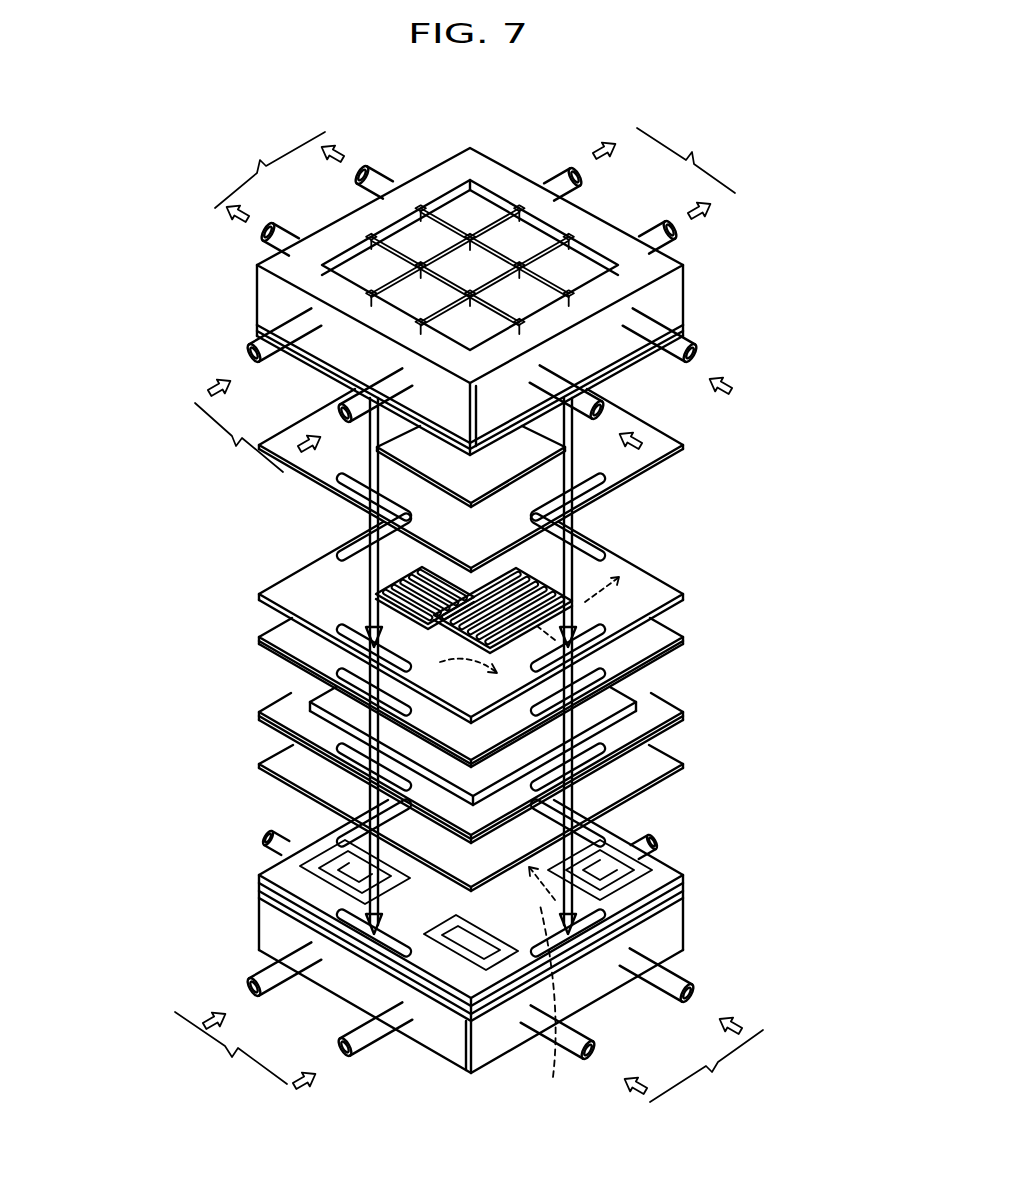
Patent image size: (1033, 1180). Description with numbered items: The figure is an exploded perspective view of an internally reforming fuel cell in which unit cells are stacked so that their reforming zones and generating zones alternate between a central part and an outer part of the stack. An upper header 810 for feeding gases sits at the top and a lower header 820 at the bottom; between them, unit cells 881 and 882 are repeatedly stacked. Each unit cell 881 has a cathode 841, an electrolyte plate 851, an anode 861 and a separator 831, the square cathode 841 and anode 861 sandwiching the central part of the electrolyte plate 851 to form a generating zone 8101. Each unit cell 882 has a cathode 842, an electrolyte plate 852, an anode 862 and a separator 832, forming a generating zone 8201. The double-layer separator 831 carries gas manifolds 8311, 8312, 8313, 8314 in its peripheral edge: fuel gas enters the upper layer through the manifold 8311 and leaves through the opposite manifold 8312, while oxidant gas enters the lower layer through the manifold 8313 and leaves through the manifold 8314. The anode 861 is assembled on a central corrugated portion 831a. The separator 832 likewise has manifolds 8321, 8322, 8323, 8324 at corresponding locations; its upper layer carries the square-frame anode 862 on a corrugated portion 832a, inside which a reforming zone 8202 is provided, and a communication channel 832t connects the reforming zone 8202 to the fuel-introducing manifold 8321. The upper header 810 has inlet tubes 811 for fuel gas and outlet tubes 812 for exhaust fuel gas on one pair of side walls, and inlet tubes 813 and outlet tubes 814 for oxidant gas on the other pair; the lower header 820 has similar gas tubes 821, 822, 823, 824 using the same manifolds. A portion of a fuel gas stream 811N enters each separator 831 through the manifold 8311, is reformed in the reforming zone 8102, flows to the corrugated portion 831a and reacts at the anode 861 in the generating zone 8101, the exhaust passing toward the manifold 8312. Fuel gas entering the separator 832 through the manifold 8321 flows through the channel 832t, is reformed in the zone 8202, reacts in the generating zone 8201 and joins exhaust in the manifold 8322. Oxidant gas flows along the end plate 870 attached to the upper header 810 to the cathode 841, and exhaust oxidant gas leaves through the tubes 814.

The upper header 810 is at (676, 300).
The inlet tubes 811 is at (538, 447).
The fuel gas stream 811N is at (608, 697).
The outlet tubes 812 is at (280, 179).
The inlet tubes 813 is at (259, 425).
The outlet tubes 814 is at (668, 173).
The lower header 820 is at (467, 926).
The gas tube 821 is at (694, 1059).
The gas tube 822 is at (300, 850).
The gas tube 823 is at (233, 1050).
The gas tube 824 is at (668, 848).
The separator 831 is at (522, 617).
The corrugated portion 831a is at (600, 604).
The gas introducing manifold 8311 is at (608, 630).
The gas discharging manifold 8312 is at (340, 545).
The gas introducing manifold 8313 is at (336, 632).
The gas discharging manifold 8314 is at (606, 546).
The separator 832 is at (405, 857).
The corrugated portion 832a is at (330, 845).
The communication channel 832t is at (548, 1005).
The manifold 8321 is at (678, 876).
The manifold 8322 is at (323, 767).
The manifold 8323 is at (350, 922).
The manifold 8324 is at (610, 828).
The cathode 841 is at (675, 440).
The cathode 842 is at (307, 683).
The electrolyte plate 851 is at (662, 470).
The electrolyte plate 852 is at (284, 712).
The anode 861 is at (641, 504).
The anode 862 is at (320, 767).
The end plate 870 is at (259, 337).
The unit cell 881 is at (552, 556).
The unit cell 882 is at (362, 811).
The generating zone 8101 is at (560, 480).
The reforming zone 8102 is at (640, 583).
The generating zone 8201 is at (395, 748).
The reforming zone 8202 is at (282, 840).